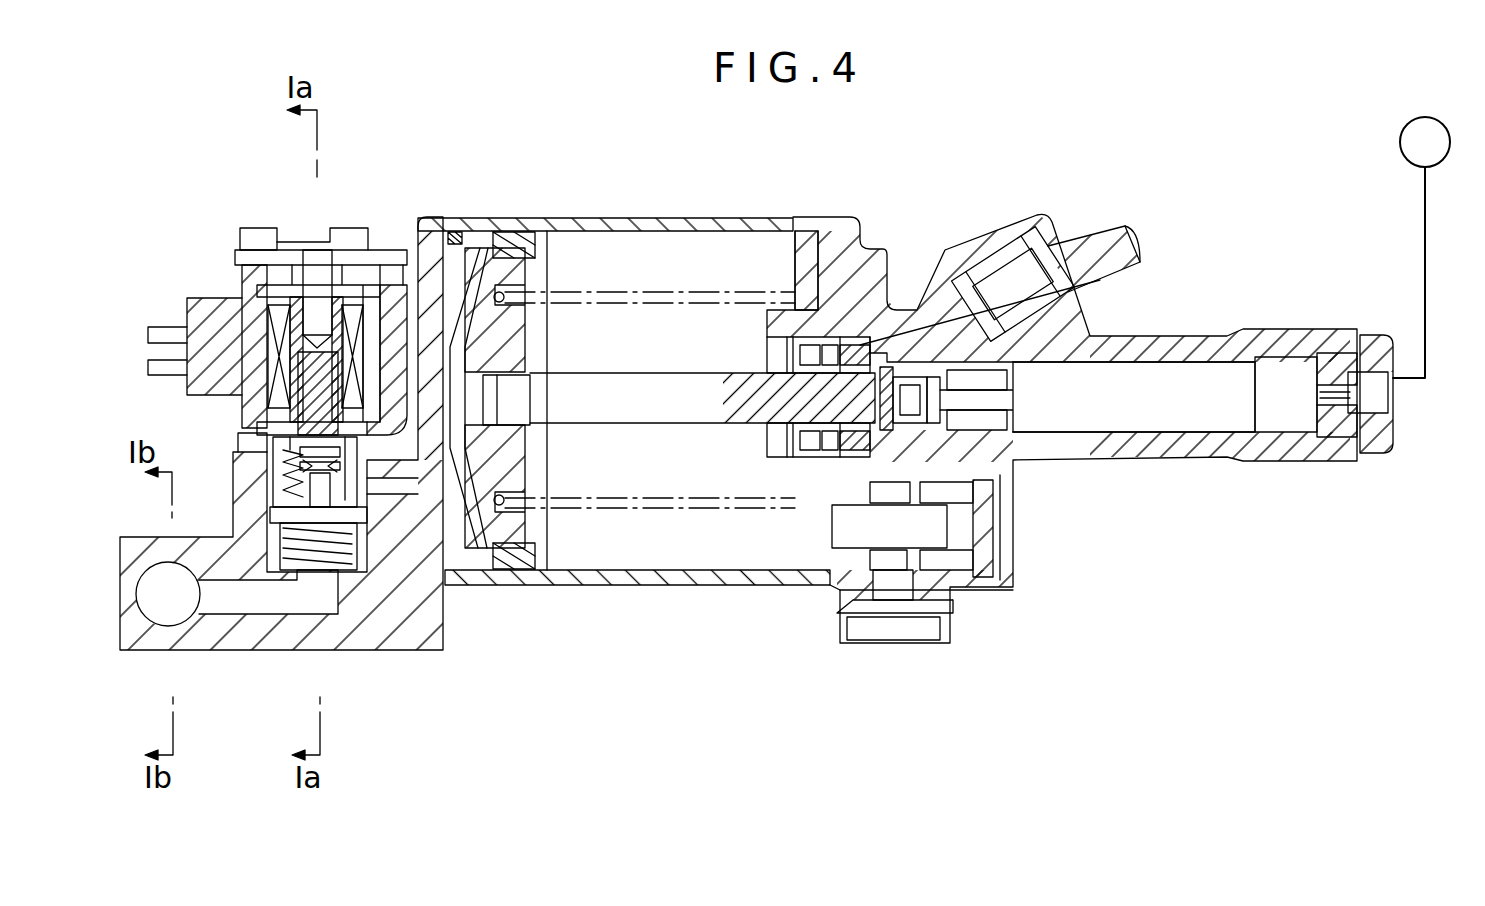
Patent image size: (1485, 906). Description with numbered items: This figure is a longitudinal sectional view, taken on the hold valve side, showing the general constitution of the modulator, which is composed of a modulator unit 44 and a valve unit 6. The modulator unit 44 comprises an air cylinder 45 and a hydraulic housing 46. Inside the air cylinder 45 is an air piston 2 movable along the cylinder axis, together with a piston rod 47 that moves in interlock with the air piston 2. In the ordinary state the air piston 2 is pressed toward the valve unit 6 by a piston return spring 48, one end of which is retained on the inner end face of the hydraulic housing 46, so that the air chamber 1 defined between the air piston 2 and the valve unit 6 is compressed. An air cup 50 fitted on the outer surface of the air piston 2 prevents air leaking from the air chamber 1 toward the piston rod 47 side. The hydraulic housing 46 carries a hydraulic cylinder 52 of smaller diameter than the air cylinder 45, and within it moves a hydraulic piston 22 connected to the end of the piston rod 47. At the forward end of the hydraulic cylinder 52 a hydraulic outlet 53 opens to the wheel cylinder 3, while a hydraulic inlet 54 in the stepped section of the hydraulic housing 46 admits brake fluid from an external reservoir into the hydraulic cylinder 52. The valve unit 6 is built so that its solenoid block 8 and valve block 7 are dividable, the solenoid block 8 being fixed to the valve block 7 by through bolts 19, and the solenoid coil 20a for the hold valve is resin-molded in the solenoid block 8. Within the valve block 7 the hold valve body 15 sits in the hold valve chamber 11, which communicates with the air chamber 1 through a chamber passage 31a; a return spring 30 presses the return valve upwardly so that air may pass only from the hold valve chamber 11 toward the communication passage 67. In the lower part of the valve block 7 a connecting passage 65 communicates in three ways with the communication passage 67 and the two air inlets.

The air chamber 1 is at (470, 270).
The air piston 2 is at (550, 265).
The wheel cylinder (W/C) 3 is at (1400, 135).
The valve unit 6 is at (450, 603).
The valve block 7 is at (248, 510).
The solenoid block 8 is at (217, 313).
The hold valve chamber 11 is at (290, 473).
The hold valve body 15 is at (243, 430).
The through bolts 19 is at (256, 240).
The solenoid coil 20a is at (370, 285).
The hydraulic piston 22 is at (1013, 422).
The return spring 30 is at (355, 572).
The chamber passage 31a is at (413, 482).
The modulator unit 44 is at (1018, 575).
The air cylinder 45 is at (694, 236).
The hydraulic housing 46 is at (1130, 338).
The piston rod 47 is at (695, 380).
The piston return spring 48 is at (668, 510).
The air cup 50 is at (540, 566).
The hydraulic cylinder 52 is at (1193, 412).
The hydraulic outlet 53 is at (1380, 398).
The hydraulic inlet 54 is at (1075, 245).
The connecting passage 65 is at (163, 612).
The communication passage 67 is at (260, 600).